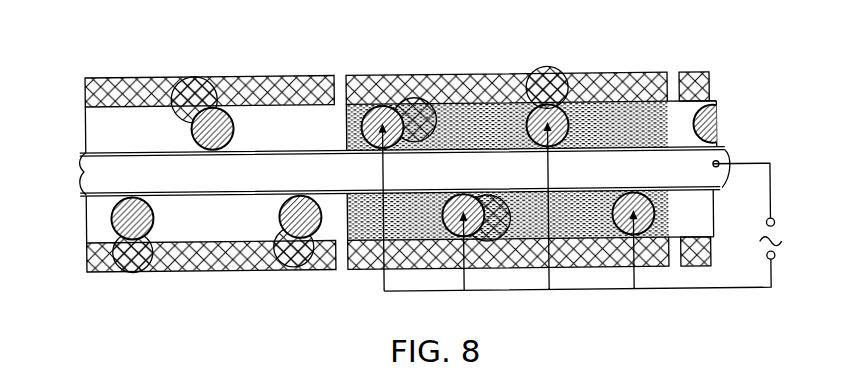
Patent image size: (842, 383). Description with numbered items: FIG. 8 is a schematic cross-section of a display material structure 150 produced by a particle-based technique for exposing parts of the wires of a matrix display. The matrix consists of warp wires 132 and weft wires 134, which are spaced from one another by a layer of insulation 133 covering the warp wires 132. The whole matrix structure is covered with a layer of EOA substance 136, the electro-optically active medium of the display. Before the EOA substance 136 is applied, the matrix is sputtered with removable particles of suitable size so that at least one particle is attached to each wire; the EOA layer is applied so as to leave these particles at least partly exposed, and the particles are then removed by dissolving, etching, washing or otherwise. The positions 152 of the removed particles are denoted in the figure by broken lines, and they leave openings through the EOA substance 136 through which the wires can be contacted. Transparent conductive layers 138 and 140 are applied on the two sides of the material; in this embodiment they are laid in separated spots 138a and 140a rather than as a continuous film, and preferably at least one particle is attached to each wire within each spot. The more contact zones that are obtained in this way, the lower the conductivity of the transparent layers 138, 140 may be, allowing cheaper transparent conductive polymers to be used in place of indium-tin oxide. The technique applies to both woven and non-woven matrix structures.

The warp wire 132 is at (78, 182).
The layer of insulation 133 is at (95, 153).
The weft wire 134 is at (120, 222).
The layer of EOA substance 136 is at (105, 122).
The transparent conductive layer 138 is at (126, 91).
The separated spot of conductive layer 138a is at (650, 73).
The transparent conductive layer 140 is at (262, 265).
The separated spot of conductive layer 140a is at (650, 250).
The display material structure 150 is at (740, 82).
The positions of removable particles 152 is at (547, 67).